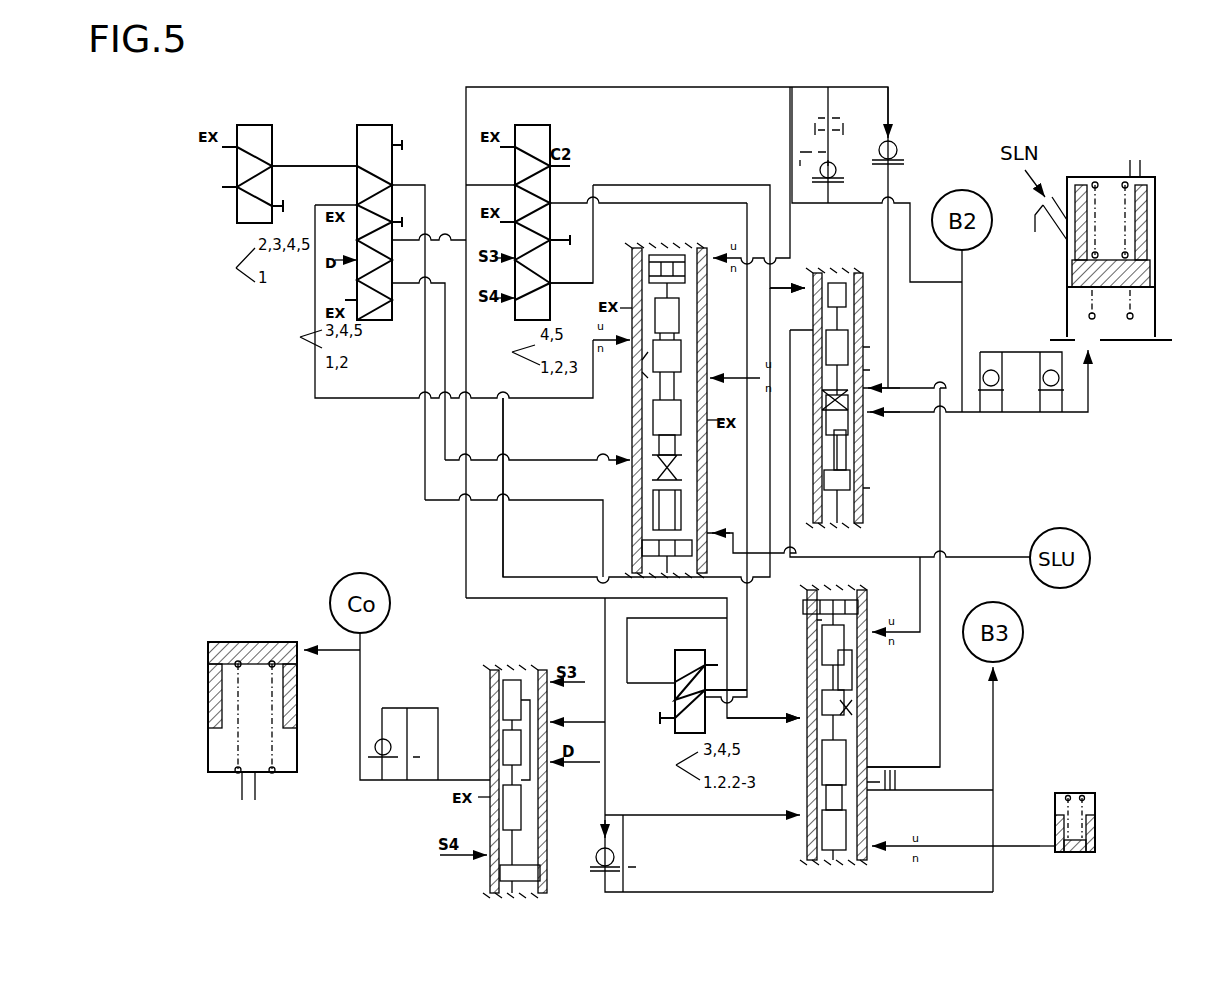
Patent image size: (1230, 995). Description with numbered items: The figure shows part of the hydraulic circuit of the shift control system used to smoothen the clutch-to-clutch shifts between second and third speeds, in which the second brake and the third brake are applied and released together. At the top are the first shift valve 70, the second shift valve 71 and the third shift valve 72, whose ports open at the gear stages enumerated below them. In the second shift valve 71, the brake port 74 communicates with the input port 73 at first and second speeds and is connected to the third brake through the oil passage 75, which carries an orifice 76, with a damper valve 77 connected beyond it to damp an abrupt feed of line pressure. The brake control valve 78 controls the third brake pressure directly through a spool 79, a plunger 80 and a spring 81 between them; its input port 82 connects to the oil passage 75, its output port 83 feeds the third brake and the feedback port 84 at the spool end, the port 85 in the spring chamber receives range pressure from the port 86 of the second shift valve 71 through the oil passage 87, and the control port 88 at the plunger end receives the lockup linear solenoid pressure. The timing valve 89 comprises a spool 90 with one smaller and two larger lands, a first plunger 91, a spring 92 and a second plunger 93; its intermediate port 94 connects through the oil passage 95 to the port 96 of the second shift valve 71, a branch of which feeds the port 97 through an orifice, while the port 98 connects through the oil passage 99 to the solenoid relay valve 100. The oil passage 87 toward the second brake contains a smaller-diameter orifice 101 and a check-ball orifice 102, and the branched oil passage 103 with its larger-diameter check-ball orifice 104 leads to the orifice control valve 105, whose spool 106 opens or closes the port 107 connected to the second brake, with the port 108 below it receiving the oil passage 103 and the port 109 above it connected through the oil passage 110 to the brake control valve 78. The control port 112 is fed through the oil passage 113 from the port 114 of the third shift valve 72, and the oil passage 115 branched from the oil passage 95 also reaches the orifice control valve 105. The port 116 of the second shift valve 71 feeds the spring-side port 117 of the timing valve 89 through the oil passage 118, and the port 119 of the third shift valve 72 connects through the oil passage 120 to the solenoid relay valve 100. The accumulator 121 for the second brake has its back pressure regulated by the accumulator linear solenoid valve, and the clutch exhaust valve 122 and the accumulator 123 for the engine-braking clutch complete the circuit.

The 1-2 shift valve 70 is at (255, 123).
The 2-3 shift valve 71 is at (380, 123).
The 3-4 shift valve 72 is at (552, 128).
The input port 73 is at (357, 166).
The brake port 74 is at (392, 185).
The oil passage 75 is at (425, 460).
The orifice 76 is at (625, 850).
The damper valve 77 is at (1095, 812).
The B-3 control valve 78 is at (775, 855).
The spool 79 is at (883, 722).
The plunger 80 is at (850, 668).
The spring 81 is at (815, 700).
The input port 82 is at (805, 822).
The output port 83 is at (862, 802).
The feedback port 84 is at (862, 852).
The port 85 is at (862, 722).
The port 86 is at (410, 240).
The oil passage 87 is at (512, 87).
The control port 88 is at (866, 620).
The 2-3 timing valve 89 is at (692, 395).
The spool 90 is at (697, 319).
The first plunger 91 is at (690, 505).
The spring 92 is at (690, 472).
The second plunger 93 is at (655, 255).
The intermediate port 94 is at (625, 405).
The oil passage 95 is at (336, 398).
The port 96 is at (357, 205).
The port 97 is at (647, 360).
The port 98 is at (690, 372).
The oil passage 99 is at (677, 650).
The solenoid relay valve 100 is at (668, 742).
The smaller-diameter orifice 101 is at (790, 160).
The orifice 102 is at (815, 150).
The oil passage 103 is at (888, 110).
The larger-diameter orifice 104 is at (897, 150).
The orifice control valve 105 is at (858, 397).
The spool 106 is at (848, 318).
The port 107 is at (858, 432).
The port 108 is at (858, 440).
The port 109 is at (870, 388).
The oil passage 110 is at (940, 512).
The control port 112 is at (812, 295).
The oil passage 113 is at (628, 185).
The port 114 is at (572, 270).
The oil passage 115 is at (503, 546).
The port 116 is at (405, 283).
The port 117 is at (625, 470).
The oil passage 118 is at (445, 472).
The port 119 is at (565, 203).
The oil passage 120 is at (668, 203).
The accumulator 121 is at (1155, 316).
The C-0 exhaust valve 122 is at (512, 665).
The accumulator 123 is at (297, 745).